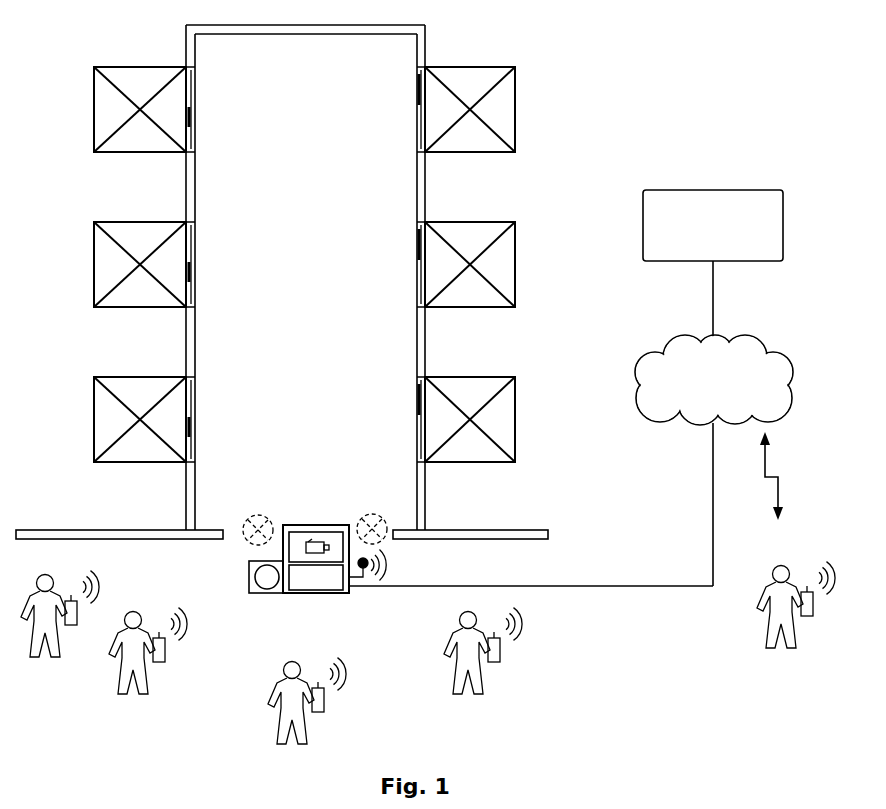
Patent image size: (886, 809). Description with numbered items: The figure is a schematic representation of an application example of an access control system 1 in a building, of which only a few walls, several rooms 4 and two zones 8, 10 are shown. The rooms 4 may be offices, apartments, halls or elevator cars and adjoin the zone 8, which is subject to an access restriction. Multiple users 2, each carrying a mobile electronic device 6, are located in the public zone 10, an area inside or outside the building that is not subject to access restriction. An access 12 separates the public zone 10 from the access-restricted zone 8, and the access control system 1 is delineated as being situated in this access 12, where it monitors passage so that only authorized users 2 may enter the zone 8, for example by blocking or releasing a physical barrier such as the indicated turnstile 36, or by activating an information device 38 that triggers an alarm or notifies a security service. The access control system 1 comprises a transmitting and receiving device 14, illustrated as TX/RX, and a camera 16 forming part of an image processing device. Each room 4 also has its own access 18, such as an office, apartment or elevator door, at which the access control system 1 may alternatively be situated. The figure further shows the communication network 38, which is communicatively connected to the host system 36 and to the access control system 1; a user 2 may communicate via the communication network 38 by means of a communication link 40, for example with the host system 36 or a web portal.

The access control system 1 is at (341, 511).
The user 2 is at (53, 587).
The room 4 is at (119, 65).
The mobile electronic device 6 is at (77, 610).
The zone 8 is at (299, 230).
The public zone 10 is at (399, 703).
The access 12 is at (284, 492).
The transmitting and receiving device 14 is at (327, 590).
The camera 16 is at (298, 530).
The access to a room 18 is at (192, 100).
The host system 36 is at (710, 190).
The communication network 38 is at (688, 340).
The communication link 40 is at (780, 482).